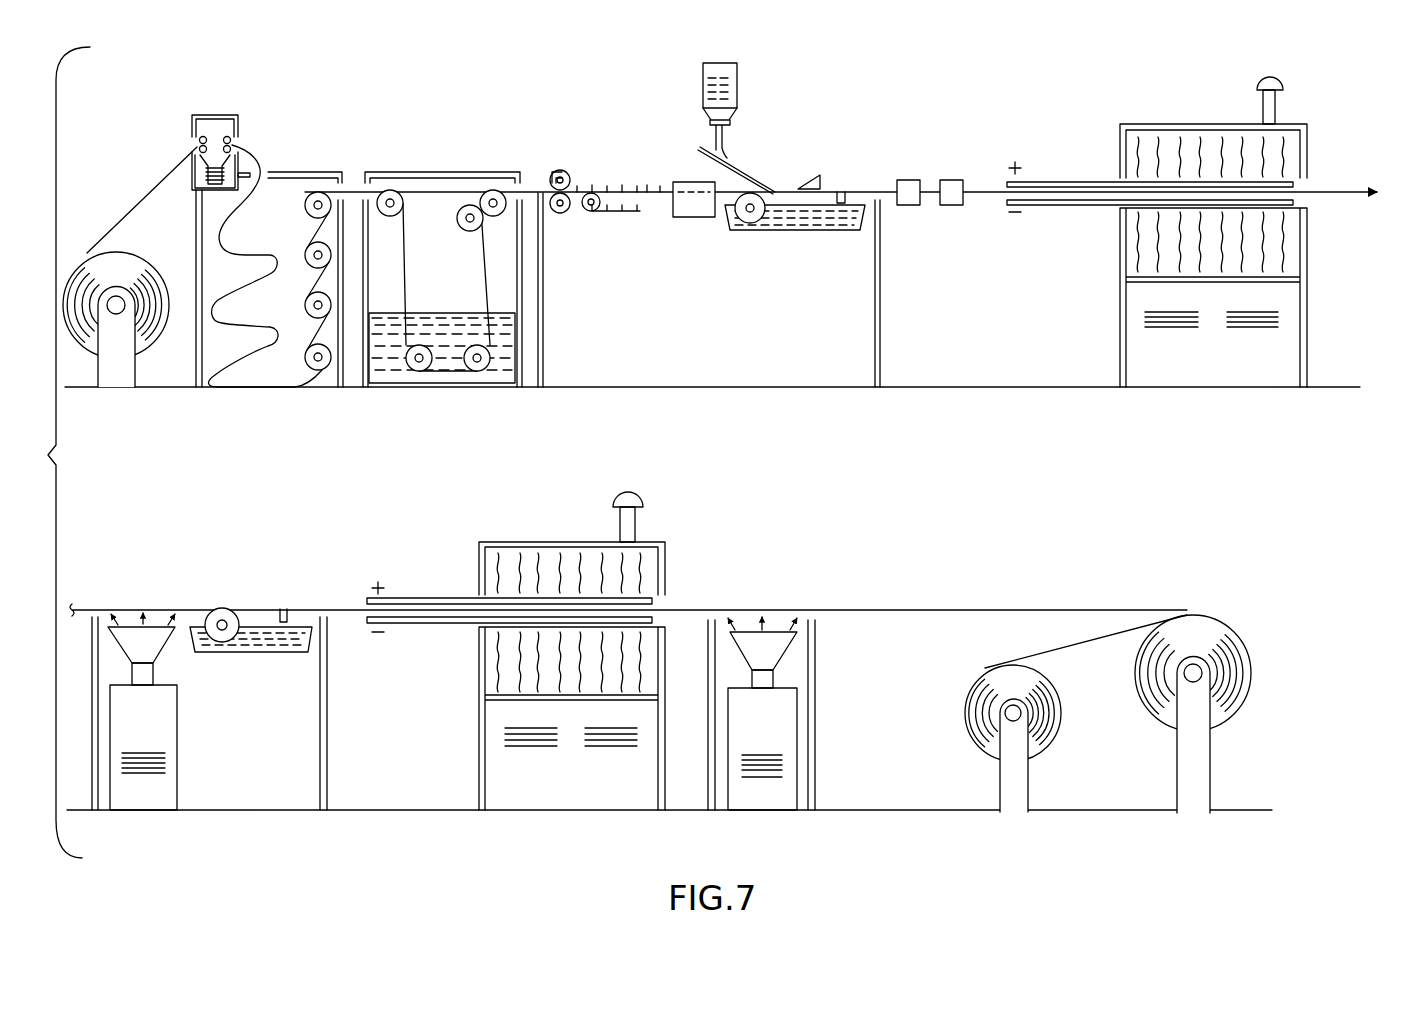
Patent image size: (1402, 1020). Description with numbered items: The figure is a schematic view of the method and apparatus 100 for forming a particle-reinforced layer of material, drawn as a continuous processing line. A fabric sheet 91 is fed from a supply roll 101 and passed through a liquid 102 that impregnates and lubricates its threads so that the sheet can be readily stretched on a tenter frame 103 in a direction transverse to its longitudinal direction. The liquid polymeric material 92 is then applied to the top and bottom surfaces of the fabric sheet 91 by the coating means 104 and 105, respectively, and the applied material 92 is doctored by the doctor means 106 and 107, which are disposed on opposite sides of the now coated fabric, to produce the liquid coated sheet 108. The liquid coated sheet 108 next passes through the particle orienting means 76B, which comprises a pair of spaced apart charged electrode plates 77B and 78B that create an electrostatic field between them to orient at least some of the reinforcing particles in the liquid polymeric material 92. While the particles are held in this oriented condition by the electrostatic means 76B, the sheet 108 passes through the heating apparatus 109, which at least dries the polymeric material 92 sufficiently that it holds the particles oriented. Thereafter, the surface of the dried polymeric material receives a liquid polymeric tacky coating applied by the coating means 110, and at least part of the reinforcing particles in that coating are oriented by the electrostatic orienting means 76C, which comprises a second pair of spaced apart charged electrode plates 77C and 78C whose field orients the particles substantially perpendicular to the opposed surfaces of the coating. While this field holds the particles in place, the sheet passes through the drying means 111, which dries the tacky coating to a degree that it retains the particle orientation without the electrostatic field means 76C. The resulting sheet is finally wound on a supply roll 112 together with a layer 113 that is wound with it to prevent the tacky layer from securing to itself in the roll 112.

The method and apparatus 100 is at (925, 108).
The fabric sheet 91 is at (140, 200).
The supply roll 101 is at (135, 255).
The liquid 102 is at (422, 318).
The tenter frame 103 is at (641, 186).
The liquid polymeric material 92 is at (743, 157).
The coating means 104 is at (787, 166).
The coating means 105 is at (718, 233).
The doctor means 106 is at (823, 178).
The doctor means 107 is at (852, 188).
The liquid coated sheet 108 is at (977, 186).
The particle orienting means 76B is at (1130, 173).
The charged electrode plate 77B is at (1068, 145).
The charged electrode plate 78B is at (1045, 205).
The heating apparatus 109 is at (1190, 148).
The coating means 110 is at (254, 620).
The electrostatic orienting means 76C is at (509, 593).
The charged electrode plate 77C is at (410, 597).
The charged electrode plate 78C is at (425, 624).
The drying means 111 is at (560, 531).
The layer 113 is at (1047, 652).
The supply roll 112 is at (1248, 657).